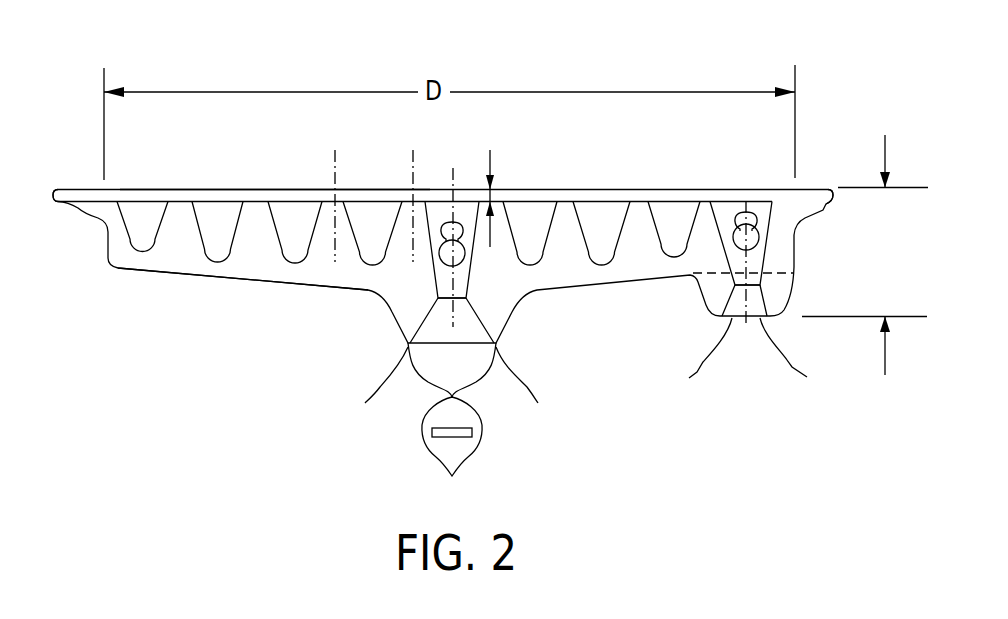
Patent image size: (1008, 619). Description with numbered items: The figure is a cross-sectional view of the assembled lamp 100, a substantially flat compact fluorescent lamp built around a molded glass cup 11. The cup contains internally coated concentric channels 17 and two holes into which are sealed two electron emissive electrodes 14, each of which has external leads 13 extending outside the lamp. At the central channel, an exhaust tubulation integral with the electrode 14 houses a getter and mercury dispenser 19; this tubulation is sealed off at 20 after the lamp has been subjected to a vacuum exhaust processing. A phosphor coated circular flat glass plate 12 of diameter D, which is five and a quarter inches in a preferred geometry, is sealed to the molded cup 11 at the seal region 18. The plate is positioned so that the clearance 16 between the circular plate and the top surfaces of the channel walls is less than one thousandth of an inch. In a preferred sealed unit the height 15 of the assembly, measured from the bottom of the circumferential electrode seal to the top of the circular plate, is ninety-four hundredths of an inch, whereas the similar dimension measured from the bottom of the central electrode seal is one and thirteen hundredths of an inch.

The assembled lamp 100 is at (472, 45).
The molded glass cup 11 is at (267, 270).
The circular flat glass plate 12 is at (142, 198).
The external leads 13 is at (380, 387).
The electron emissive electrodes 14 is at (446, 218).
The height 15 is at (865, 255).
The clearance 16 is at (490, 150).
The concentric channels 17 is at (138, 228).
The seal region 18 is at (55, 200).
The getter and mercury dispenser 19 is at (457, 437).
The seal-off 20 is at (452, 476).